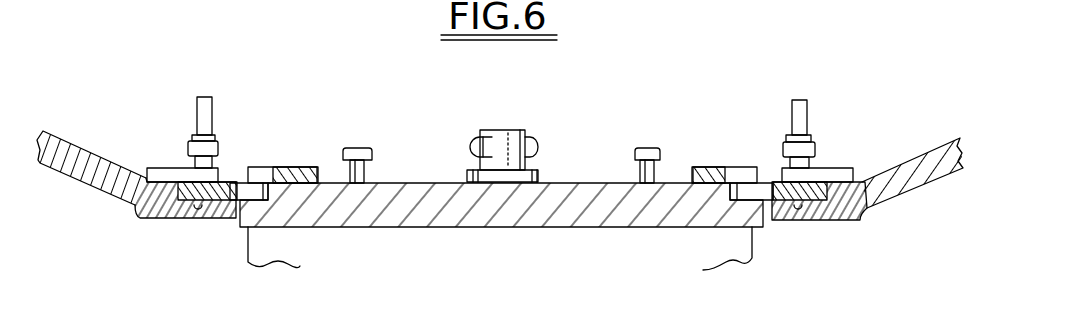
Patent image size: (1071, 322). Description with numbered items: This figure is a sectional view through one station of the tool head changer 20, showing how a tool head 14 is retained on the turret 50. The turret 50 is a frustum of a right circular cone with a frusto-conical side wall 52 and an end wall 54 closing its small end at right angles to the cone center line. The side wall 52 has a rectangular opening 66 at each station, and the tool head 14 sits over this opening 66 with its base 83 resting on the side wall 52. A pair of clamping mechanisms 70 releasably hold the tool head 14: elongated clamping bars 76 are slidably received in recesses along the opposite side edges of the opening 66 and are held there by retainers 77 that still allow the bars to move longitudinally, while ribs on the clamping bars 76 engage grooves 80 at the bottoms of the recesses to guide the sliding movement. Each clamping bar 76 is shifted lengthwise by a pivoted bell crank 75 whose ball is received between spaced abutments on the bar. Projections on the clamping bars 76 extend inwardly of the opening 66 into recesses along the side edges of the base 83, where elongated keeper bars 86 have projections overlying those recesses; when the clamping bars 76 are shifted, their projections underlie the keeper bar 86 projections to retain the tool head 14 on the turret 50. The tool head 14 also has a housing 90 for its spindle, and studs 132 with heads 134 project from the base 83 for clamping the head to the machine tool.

The tool head 14 is at (700, 258).
The tool head changer 20 is at (872, 222).
The turret 50 is at (148, 222).
The frusto-conical side wall 52 is at (97, 157).
The end wall 54 is at (213, 220).
The rectangular opening 66 is at (755, 228).
The clamping mechanism 70 is at (225, 136).
The bell crank 75 is at (206, 96).
The clamping bar 76 is at (232, 182).
The retainer 77 is at (158, 167).
The groove 80 is at (198, 208).
The base 83 is at (576, 190).
The keeper bar 86 is at (283, 167).
The housing 90 is at (503, 130).
The stud 132 is at (367, 173).
The head 134 is at (362, 148).